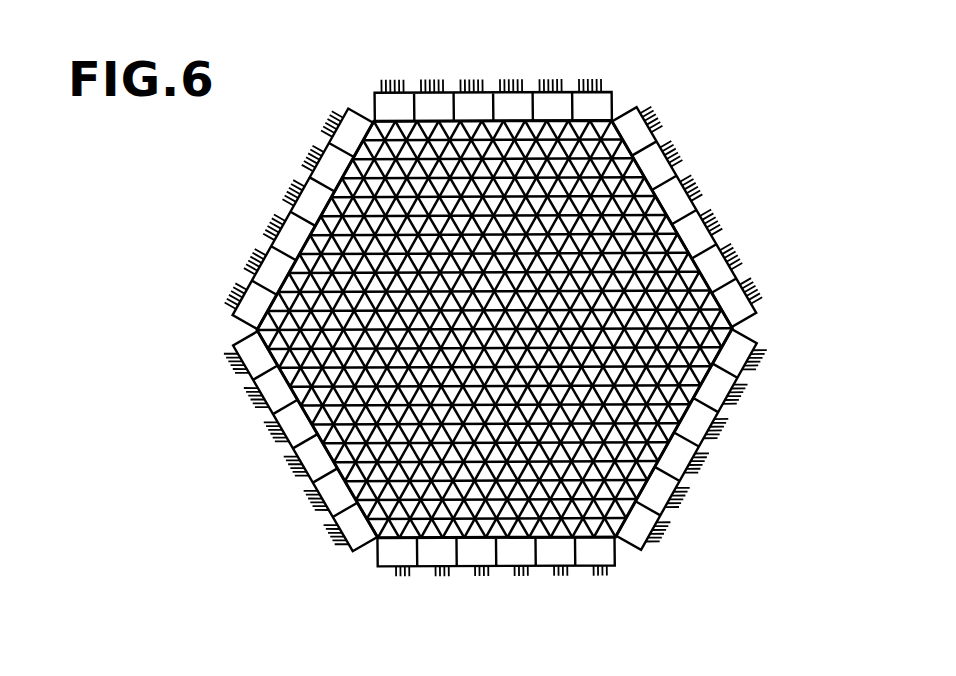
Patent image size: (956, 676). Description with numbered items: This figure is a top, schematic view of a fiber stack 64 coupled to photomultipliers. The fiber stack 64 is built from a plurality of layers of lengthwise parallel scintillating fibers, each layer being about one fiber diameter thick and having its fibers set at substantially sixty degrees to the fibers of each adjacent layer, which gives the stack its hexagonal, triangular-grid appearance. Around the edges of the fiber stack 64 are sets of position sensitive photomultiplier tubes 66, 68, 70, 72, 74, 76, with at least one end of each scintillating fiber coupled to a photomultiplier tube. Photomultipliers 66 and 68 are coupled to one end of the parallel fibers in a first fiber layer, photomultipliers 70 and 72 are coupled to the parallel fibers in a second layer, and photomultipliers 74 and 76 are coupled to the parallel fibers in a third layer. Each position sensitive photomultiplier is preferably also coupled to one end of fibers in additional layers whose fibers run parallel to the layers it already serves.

The fiber stack 64 is at (610, 533).
The position sensitive photomultiplier tube 66 is at (243, 384).
The position sensitive photomultiplier tube 68 is at (402, 548).
The position sensitive photomultiplier tube 70 is at (740, 370).
The position sensitive photomultiplier tube 72 is at (638, 143).
The position sensitive photomultiplier tube 74 is at (370, 92).
The position sensitive photomultiplier tube 76 is at (330, 135).